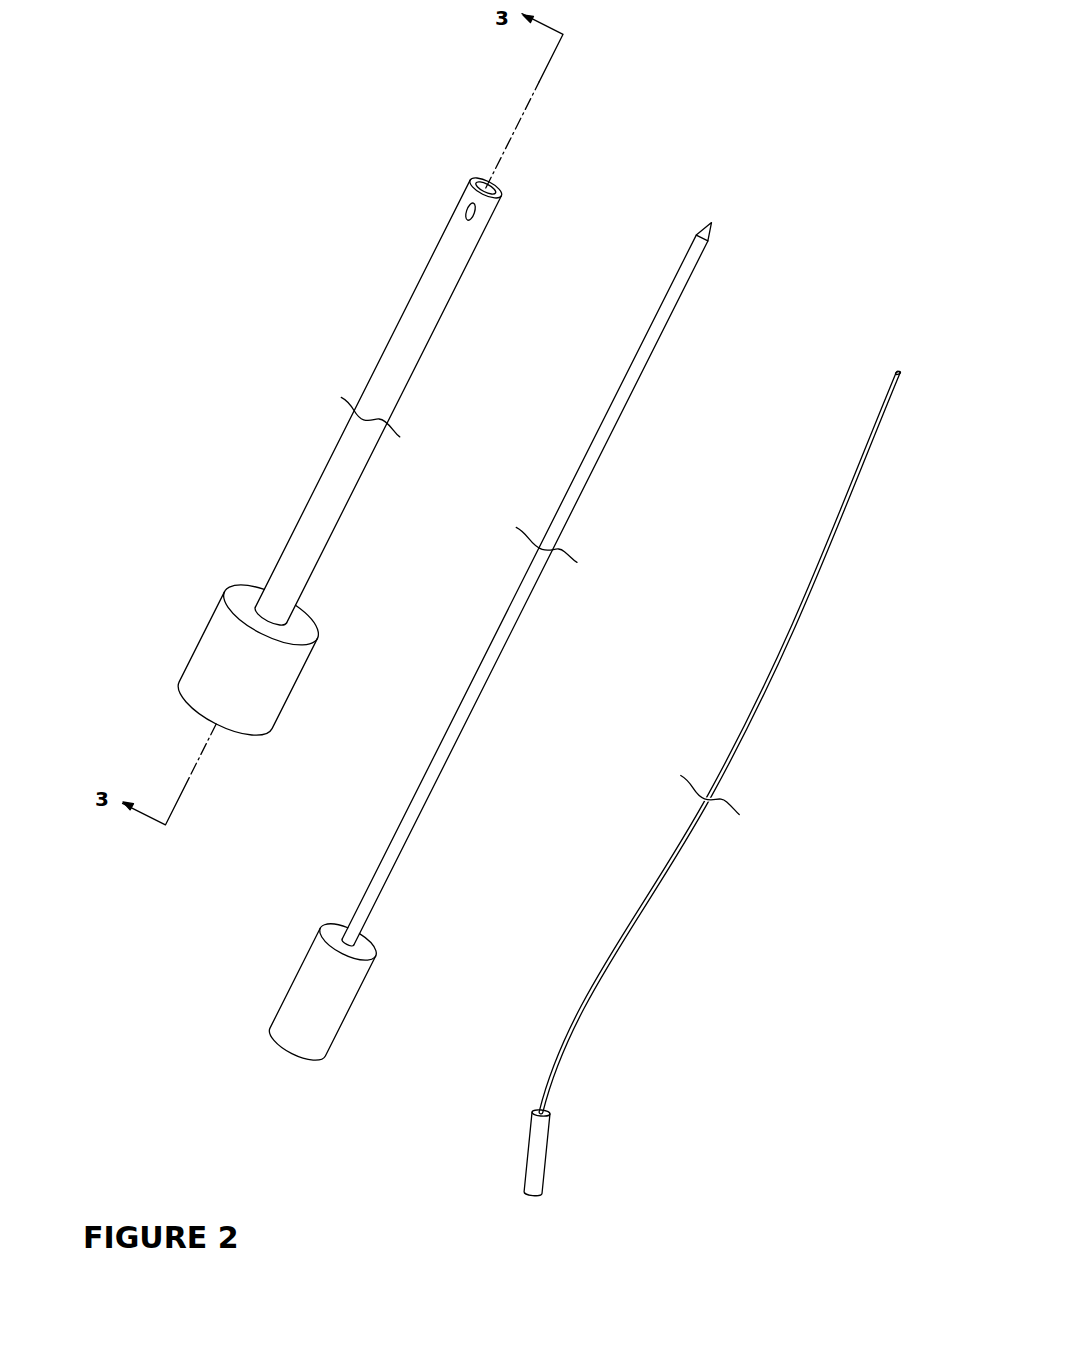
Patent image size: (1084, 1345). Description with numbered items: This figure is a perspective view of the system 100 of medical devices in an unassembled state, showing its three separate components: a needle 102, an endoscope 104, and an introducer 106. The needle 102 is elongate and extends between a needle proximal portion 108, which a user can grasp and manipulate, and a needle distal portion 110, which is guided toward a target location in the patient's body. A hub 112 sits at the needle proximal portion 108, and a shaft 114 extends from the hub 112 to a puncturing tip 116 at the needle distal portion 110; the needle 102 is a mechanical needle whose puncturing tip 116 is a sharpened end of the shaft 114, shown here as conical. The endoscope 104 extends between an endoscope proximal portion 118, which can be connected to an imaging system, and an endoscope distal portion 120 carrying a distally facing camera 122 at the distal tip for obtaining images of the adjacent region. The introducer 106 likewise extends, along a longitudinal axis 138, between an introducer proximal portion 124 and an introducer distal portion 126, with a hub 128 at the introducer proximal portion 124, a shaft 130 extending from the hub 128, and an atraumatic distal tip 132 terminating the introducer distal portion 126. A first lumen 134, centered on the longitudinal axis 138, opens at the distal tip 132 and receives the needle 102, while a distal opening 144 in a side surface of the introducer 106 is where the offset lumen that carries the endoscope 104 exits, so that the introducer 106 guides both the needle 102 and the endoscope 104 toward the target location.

The system of medical devices 100 is at (745, 140).
The needle 102 is at (477, 618).
The endoscope 104 is at (737, 677).
The introducer 106 is at (370, 305).
The needle proximal portion 108 is at (524, 591).
The needle distal portion 110 is at (706, 230).
The hub 112 is at (322, 992).
The shaft 114 is at (546, 546).
The puncturing tip 116 is at (706, 230).
The endoscope proximal portion 118 is at (585, 1020).
The endoscope distal portion 120 is at (805, 628).
The camera 122 is at (897, 372).
The introducer proximal portion 124 is at (376, 404).
The introducer distal portion 126 is at (478, 201).
The hub 128 is at (248, 660).
The shaft 130 is at (370, 417).
The distal tip 132 is at (486, 188).
The first lumen 134 is at (485, 187).
The longitudinal axis 138 is at (343, 419).
The distal opening 144 is at (471, 212).